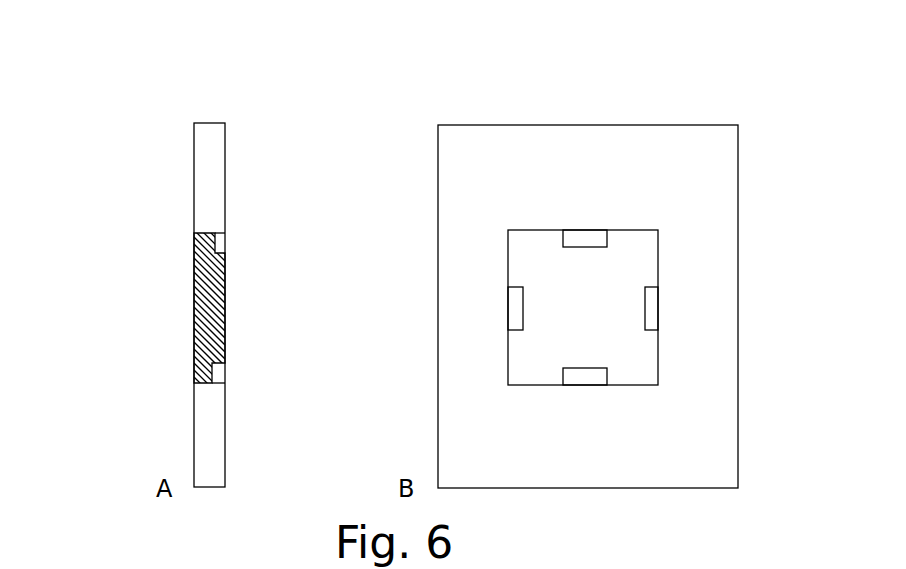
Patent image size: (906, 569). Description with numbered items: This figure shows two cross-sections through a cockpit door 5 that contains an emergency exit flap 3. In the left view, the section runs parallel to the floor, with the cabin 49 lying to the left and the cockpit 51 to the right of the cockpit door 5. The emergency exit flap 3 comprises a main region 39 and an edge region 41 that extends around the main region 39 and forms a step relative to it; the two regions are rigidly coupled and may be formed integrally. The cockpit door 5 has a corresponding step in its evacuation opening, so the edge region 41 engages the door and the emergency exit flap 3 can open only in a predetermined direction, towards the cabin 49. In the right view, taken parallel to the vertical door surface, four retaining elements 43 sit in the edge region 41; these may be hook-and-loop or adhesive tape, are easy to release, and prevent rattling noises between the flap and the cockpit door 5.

The emergency exit flap 3 is at (204, 289).
The cockpit door 5 is at (245, 173).
The main region 39 is at (225, 298).
The edge region 41 is at (195, 252).
The retaining elements 43 is at (225, 238).
The cabin 49 is at (70, 477).
The cockpit 51 is at (352, 477).